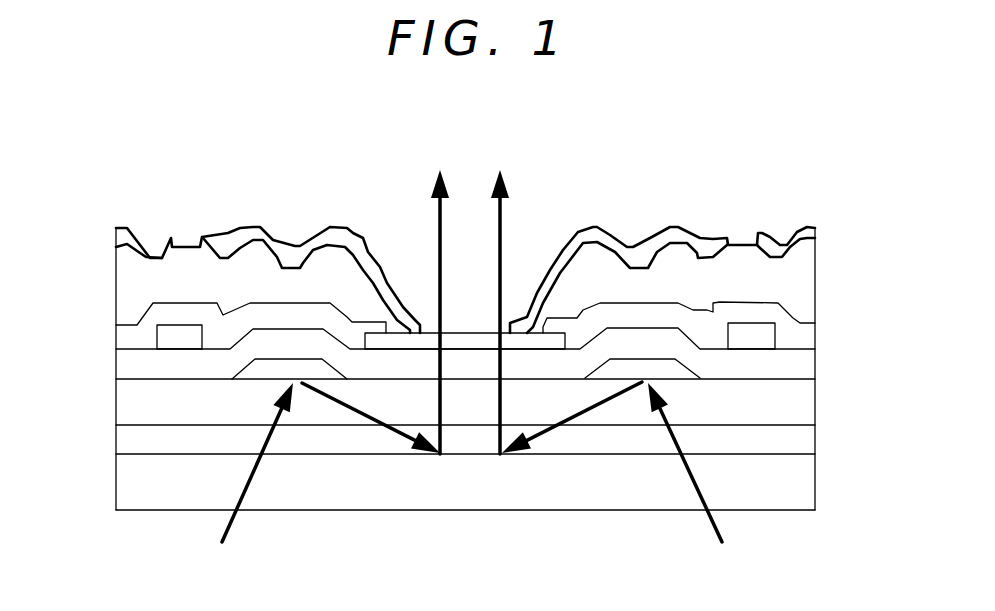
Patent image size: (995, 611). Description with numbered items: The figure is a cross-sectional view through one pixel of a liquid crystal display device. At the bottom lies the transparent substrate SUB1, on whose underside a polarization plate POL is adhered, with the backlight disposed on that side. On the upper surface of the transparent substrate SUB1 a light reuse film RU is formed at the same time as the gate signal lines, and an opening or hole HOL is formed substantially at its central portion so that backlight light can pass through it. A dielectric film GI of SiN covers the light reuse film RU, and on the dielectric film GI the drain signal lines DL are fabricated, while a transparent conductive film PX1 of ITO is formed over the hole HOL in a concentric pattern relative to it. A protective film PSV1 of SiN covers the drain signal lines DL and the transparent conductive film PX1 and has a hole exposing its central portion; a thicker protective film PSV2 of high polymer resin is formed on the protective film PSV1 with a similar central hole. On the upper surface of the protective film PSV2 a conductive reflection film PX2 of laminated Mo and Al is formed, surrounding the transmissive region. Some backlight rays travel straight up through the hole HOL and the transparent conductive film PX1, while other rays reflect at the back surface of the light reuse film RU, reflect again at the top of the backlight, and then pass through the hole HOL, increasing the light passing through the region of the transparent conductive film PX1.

The conductive reflection film PX2 is at (127, 232).
The protective film PSV1 is at (238, 323).
The protective film PSV2 is at (327, 270).
The transparent conductive film PX1 is at (468, 340).
The drain signal line DL is at (157, 337).
The dielectric film GI is at (130, 367).
The polarization plate POL is at (137, 478).
The hole HOL is at (337, 372).
The transparent substrate SUB1 is at (468, 497).
The light reuse film RU is at (267, 373).